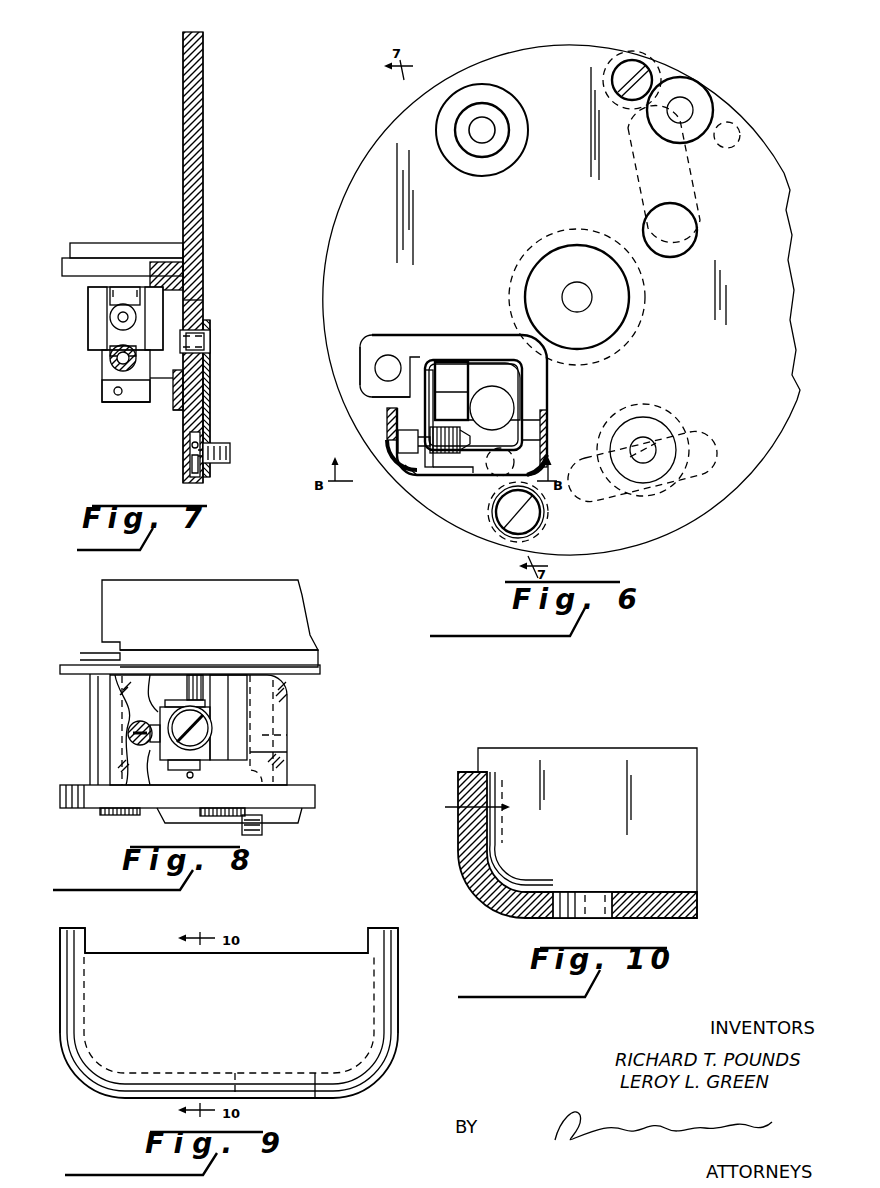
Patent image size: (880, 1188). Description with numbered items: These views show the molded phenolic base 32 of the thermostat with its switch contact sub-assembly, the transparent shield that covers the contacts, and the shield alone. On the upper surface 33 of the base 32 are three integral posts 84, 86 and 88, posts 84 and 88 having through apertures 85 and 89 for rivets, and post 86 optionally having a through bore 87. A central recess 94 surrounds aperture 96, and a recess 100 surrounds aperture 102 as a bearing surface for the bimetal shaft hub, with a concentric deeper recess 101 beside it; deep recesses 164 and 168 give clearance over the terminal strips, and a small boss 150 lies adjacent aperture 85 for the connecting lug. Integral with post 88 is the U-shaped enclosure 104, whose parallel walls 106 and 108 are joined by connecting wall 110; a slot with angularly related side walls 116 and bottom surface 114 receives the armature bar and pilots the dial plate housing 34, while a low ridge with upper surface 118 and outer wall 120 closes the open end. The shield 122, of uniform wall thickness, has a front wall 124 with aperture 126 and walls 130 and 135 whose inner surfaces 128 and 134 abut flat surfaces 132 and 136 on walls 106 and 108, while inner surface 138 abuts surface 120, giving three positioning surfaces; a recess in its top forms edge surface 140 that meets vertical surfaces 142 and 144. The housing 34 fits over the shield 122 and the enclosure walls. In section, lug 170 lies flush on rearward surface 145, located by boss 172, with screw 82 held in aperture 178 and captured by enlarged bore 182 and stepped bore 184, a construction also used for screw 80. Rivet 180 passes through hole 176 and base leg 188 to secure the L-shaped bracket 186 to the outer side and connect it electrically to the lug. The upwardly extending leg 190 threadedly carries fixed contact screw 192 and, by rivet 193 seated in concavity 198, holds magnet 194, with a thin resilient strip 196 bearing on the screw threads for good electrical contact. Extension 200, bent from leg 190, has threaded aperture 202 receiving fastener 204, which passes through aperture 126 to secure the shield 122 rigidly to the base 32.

In FIG. 7, the base 32 is at (205, 248).
In FIG. 6, the base 32 is at (346, 199).
In FIG. 8, the base 32 is at (60, 785).
In FIG. 7, the upper surface of base 33 is at (183, 103).
In FIG. 6, the upper surface of base 33 is at (375, 152).
In FIG. 8, the dial plate housing 34 is at (102, 597).
In FIG. 6, the screw fastener 80 is at (645, 72).
In FIG. 7, the screw 82 is at (213, 466).
In FIG. 6, the screw 82 is at (512, 532).
In FIG. 8, the screw 82 is at (255, 835).
In FIG. 6, the post 84 is at (712, 108).
In FIG. 6, the through aperture 85 is at (690, 100).
In FIG. 6, the post 86 is at (660, 447).
In FIG. 6, the through bore 87 is at (650, 446).
In FIG. 7, the post 88 is at (78, 246).
In FIG. 6, the post 88 is at (380, 343).
In FIG. 8, the post 88 is at (92, 684).
In FIG. 6, the through aperture 89 is at (370, 358).
In FIG. 6, the central recess 94 is at (629, 295).
In FIG. 6, the aperture 96 is at (590, 305).
In FIG. 6, the recess 100 is at (517, 106).
In FIG. 6, the concentric deeper recess 101 is at (490, 105).
In FIG. 6, the aperture 102 is at (494, 128).
In FIG. 6, the U-shaped enclosure 104 is at (435, 340).
In FIG. 7, the wall 106 is at (64, 266).
In FIG. 6, the wall 106 is at (370, 392).
In FIG. 6, the wall 108 is at (540, 389).
In FIG. 6, the connecting wall 110 is at (455, 345).
In FIG. 8, the connecting wall 110 is at (143, 666).
In FIG. 7, the bottom surface of slot 114 is at (155, 272).
In FIG. 8, the bottom surface of slot 114 is at (197, 758).
In FIG. 6, the side walls 116 is at (470, 355).
In FIG. 8, the side walls 116 is at (235, 668).
In FIG. 7, the upper surface of ridge 118 is at (173, 404).
In FIG. 6, the upper surface of ridge 118 is at (456, 475).
In FIG. 8, the upper surface of ridge 118 is at (190, 778).
In FIG. 7, the outer wall of ridge 120 is at (185, 418).
In FIG. 6, the outer wall of ridge 120 is at (488, 470).
In FIG. 8, the shield 122 is at (289, 722).
In FIG. 9, the shield 122 is at (355, 1020).
In FIG. 9, the front wall 124 is at (130, 1098).
In FIG. 10, the front wall 124 is at (520, 918).
In FIG. 9, the aperture 126 is at (180, 1080).
In FIG. 10, the aperture 126 is at (558, 892).
In FIG. 8, the inner surface 128 is at (90, 708).
In FIG. 9, the inner surface 128 is at (88, 932).
In FIG. 10, the inner surface 128 is at (503, 755).
In FIG. 8, the wall 130 is at (115, 722).
In FIG. 9, the wall 130 is at (68, 1010).
In FIG. 6, the flat surface 132 is at (387, 409).
In FIG. 9, the inner surface 134 is at (372, 930).
In FIG. 9, the wall 135 is at (398, 991).
In FIG. 6, the flat surface 136 is at (548, 410).
In FIG. 8, the flat surface 136 is at (284, 698).
In FIG. 9, the inner surface 138 is at (315, 1075).
In FIG. 9, the edge surface 140 is at (110, 953).
In FIG. 6, the vertical surface 142 is at (387, 428).
In FIG. 6, the vertical surface 144 is at (548, 425).
In FIG. 8, the vertical surface 144 is at (288, 736).
In FIG. 7, the surface of base 145 is at (203, 104).
In FIG. 6, the boss 150 is at (723, 148).
In FIG. 6, the deep recess 164 is at (692, 236).
In FIG. 6, the deep circular recess 168 is at (690, 480).
In FIG. 7, the lug 170 is at (210, 372).
In FIG. 8, the lug 170 is at (298, 822).
In FIG. 7, the boss 172 is at (210, 392).
In FIG. 7, the aperture 176 is at (210, 334).
In FIG. 7, the aperture 178 is at (208, 437).
In FIG. 7, the rivet 180 is at (210, 348).
In FIG. 6, the rivet 180 is at (505, 409).
In FIG. 7, the enlarged bore 182 is at (190, 447).
In FIG. 7, the stepped bore 184 is at (189, 470).
In FIG. 6, the stepped bore 184 is at (532, 520).
In FIG. 7, the bracket 186 is at (96, 389).
In FIG. 7, the base leg 188 is at (203, 302).
In FIG. 6, the base leg 188 is at (495, 385).
In FIG. 7, the upwardly extending leg 190 is at (102, 372).
In FIG. 6, the upwardly extending leg 190 is at (428, 362).
In FIG. 7, the fixed contact screw 192 is at (110, 356).
In FIG. 6, the fixed contact screw 192 is at (396, 447).
In FIG. 8, the fixed contact screw 192 is at (128, 742).
In FIG. 7, the rivet 193 is at (110, 318).
In FIG. 6, the rivet 193 is at (413, 382).
In FIG. 7, the magnet 194 is at (90, 299).
In FIG. 6, the magnet 194 is at (465, 387).
In FIG. 6, the resilient strip 196 is at (451, 403).
In FIG. 7, the concavity 198 is at (106, 333).
In FIG. 7, the extension 200 is at (104, 403).
In FIG. 6, the extension 200 is at (418, 470).
In FIG. 7, the threaded aperture 202 is at (118, 397).
In FIG. 6, the threaded aperture 202 is at (427, 480).
In FIG. 8, the screw fastener 204 is at (240, 752).